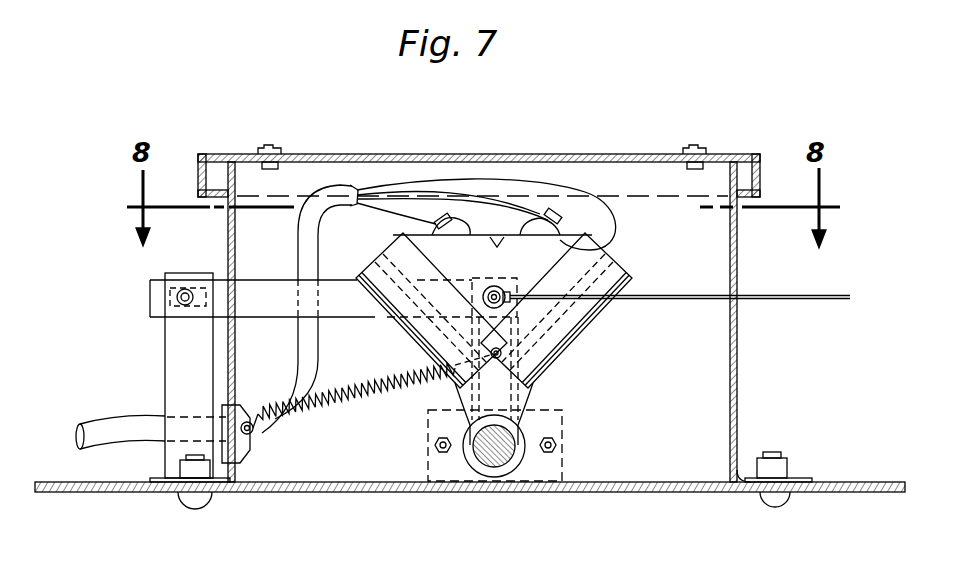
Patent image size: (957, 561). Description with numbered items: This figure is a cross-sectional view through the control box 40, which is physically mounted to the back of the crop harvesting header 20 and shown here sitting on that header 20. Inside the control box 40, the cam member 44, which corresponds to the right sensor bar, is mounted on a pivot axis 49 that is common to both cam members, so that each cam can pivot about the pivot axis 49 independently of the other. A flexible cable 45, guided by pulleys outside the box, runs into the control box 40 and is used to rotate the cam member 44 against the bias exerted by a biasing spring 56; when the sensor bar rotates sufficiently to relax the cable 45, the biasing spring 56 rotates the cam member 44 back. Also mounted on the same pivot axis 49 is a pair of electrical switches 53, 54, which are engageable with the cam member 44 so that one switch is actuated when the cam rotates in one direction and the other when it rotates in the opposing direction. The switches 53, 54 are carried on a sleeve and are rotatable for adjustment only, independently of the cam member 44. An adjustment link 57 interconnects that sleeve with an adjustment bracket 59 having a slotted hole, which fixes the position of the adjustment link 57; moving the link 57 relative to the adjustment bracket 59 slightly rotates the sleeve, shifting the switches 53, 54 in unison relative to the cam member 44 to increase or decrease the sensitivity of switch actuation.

The crop harvesting header 20 is at (560, 493).
The control box 40 is at (358, 154).
The cam member 44 is at (585, 338).
The flexible cable 45 is at (693, 295).
The pivot axis 49 is at (528, 456).
The electrical switch 53 is at (457, 222).
The electrical switch 54 is at (532, 223).
The biasing spring 56 is at (355, 405).
The adjustment link 57 is at (279, 279).
The adjustment bracket 59 is at (173, 375).